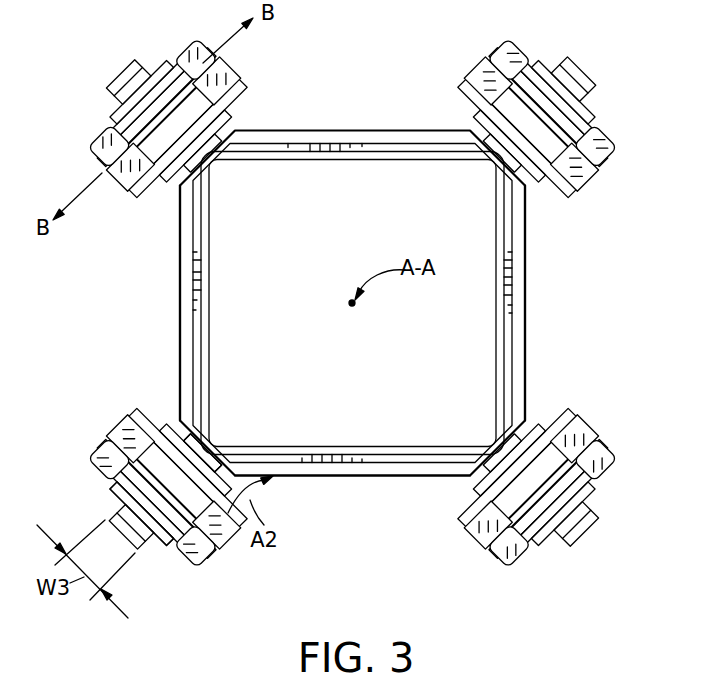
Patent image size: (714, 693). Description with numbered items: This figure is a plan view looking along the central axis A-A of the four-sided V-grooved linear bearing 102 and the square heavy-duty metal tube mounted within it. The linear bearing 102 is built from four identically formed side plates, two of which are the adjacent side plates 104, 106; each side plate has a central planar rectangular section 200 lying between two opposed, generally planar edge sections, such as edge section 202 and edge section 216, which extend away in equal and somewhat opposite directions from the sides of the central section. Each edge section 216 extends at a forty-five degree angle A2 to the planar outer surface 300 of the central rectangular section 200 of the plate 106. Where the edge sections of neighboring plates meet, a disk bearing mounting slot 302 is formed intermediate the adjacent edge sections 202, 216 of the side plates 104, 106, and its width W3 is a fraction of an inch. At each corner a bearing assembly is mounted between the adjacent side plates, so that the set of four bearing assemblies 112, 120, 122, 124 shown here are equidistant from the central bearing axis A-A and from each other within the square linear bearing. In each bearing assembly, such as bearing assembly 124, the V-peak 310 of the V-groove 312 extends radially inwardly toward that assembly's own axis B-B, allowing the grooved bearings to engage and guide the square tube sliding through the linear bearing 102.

The V-grooved linear bearing 102 is at (525, 237).
The side plate 104 is at (183, 217).
The side plate 106 is at (392, 475).
The bearing assembly 112 is at (100, 466).
The bearing assembly 120 is at (607, 466).
The bearing assembly 122 is at (582, 82).
The bearing assembly 124 is at (240, 79).
The central planar rectangular section 200 is at (315, 475).
The edge section 202 is at (157, 556).
The edge section 216 is at (182, 428).
The planar outer surface 300 is at (370, 475).
The disk bearing mounting slot 302 is at (113, 548).
The V-peak 310 is at (122, 78).
The V-groove 312 is at (113, 78).